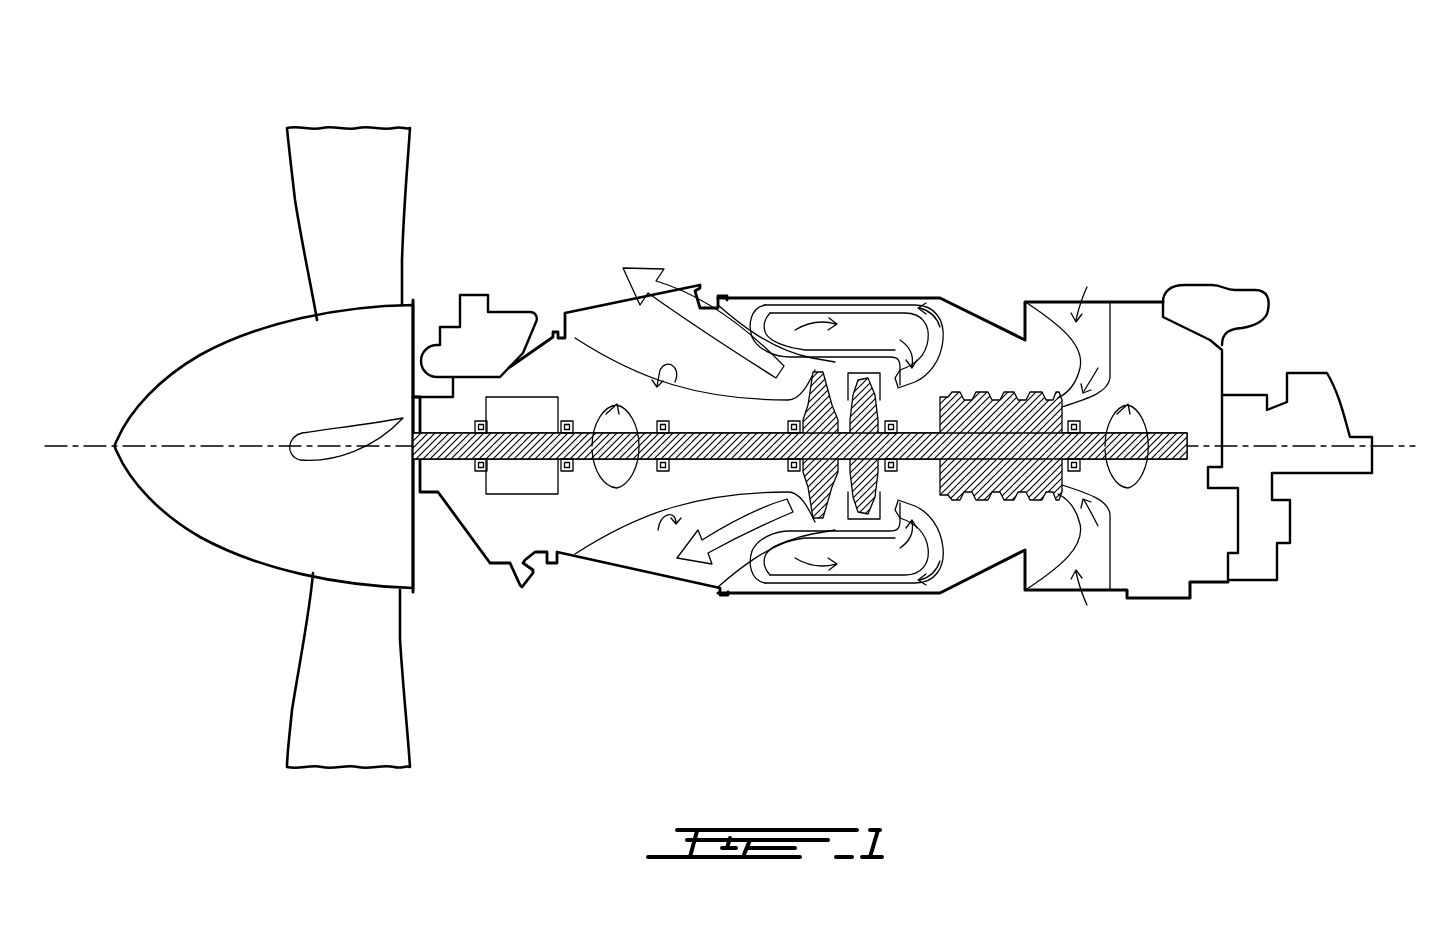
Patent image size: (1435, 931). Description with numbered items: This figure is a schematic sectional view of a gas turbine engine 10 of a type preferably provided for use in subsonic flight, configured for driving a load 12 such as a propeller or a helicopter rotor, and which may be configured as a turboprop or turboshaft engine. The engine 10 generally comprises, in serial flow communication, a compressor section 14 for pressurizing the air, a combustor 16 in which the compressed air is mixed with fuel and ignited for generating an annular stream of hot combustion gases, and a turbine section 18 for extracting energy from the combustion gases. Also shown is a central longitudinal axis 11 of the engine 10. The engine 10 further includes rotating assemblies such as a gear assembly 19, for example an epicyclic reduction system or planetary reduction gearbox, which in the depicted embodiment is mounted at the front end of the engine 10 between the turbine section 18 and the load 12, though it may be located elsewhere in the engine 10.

The gas turbine engine 10 is at (1048, 186).
The central longitudinal axis 11 is at (80, 440).
The load 12 is at (318, 712).
The compressor section 14 is at (1035, 352).
The combustor 16 is at (861, 332).
The turbine section 18 is at (840, 378).
The gear assembly 19 is at (540, 397).